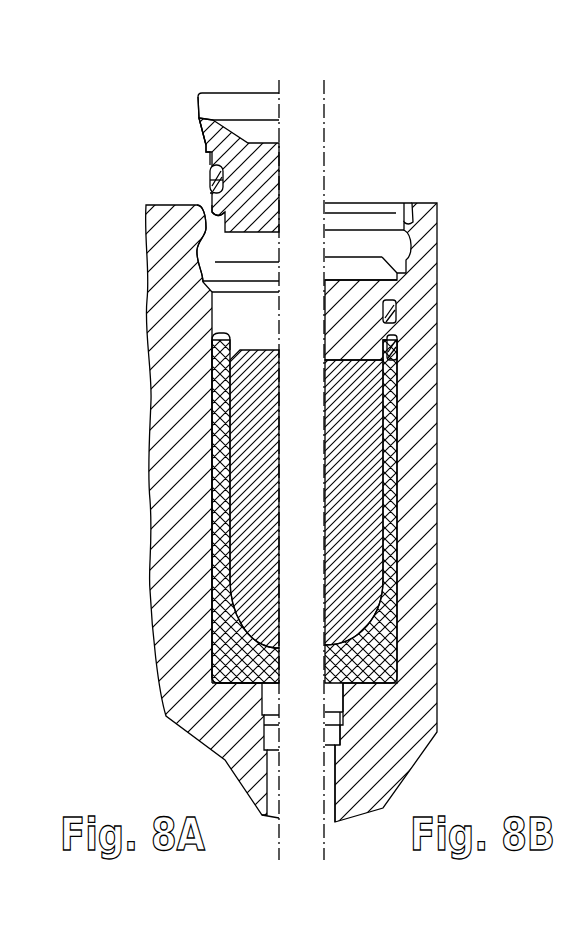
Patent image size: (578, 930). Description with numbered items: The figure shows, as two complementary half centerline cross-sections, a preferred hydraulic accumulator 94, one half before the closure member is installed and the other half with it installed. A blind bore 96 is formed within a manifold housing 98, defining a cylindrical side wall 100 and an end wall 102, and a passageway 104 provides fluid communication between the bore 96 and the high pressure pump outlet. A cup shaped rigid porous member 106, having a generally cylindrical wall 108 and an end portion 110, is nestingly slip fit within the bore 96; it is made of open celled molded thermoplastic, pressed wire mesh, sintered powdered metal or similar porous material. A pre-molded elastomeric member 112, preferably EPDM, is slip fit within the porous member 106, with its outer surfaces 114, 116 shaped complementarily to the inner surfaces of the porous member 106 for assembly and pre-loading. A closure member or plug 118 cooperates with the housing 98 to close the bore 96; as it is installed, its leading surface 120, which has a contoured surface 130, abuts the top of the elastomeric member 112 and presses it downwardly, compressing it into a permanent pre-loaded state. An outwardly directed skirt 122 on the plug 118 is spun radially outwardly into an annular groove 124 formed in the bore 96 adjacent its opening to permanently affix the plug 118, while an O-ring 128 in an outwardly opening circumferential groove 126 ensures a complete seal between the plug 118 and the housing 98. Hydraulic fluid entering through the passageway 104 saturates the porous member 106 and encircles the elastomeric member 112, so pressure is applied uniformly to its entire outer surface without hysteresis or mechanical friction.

In FIG. 8A, the hydraulic accumulator 94 is at (93, 164).
In FIG. 8B, the blind bore 96 is at (408, 220).
In FIG. 8B, the manifold housing 98 is at (415, 476).
In FIG. 8A, the cylindrical side wall 100 is at (218, 305).
In FIG. 8A, the end wall 102 is at (222, 667).
In FIG. 8B, the passageway 104 is at (323, 805).
In FIG. 8A, the rigid porous member 106 is at (218, 540).
In FIG. 8A, the cylindrical wall 108 is at (218, 450).
In FIG. 8B, the end portion 110 is at (378, 658).
In FIG. 8B, the elastomeric member 112 is at (357, 402).
In FIG. 8A, the outer surface of elastomeric member 114 is at (228, 338).
In FIG. 8A, the outer surface of elastomeric member 116 is at (238, 358).
In FIG. 8A, the closure member or plug 118 is at (253, 107).
In FIG. 8B, the leading surface 120 is at (300, 217).
In FIG. 8A, the skirt 122 is at (196, 112).
In FIG. 8A, the annular groove 124 is at (190, 253).
In FIG. 8A, the circumferential groove 126 is at (211, 190).
In FIG. 8A, the O-ring 128 is at (213, 178).
In FIG. 8A, the contoured surface 130 is at (208, 207).